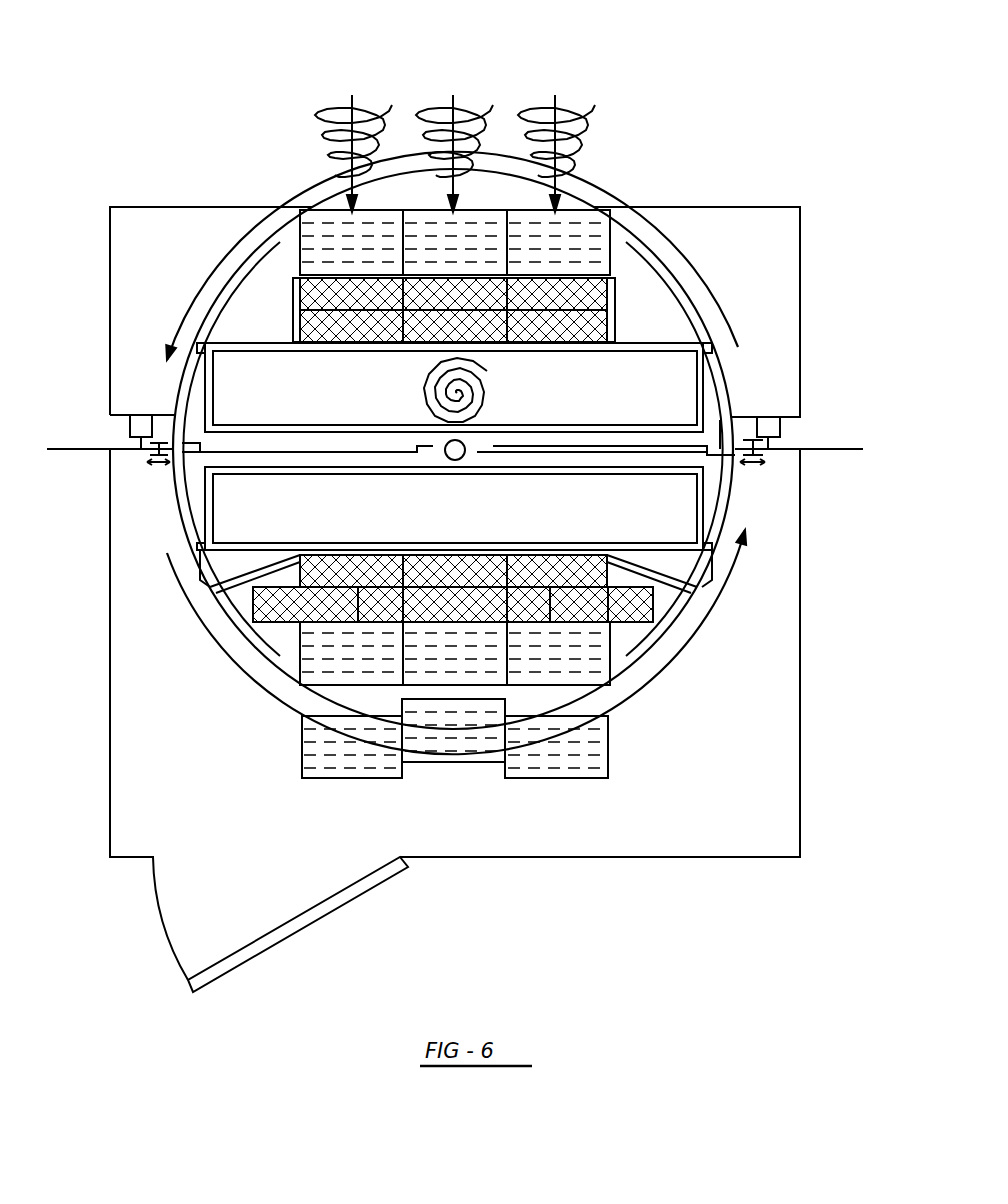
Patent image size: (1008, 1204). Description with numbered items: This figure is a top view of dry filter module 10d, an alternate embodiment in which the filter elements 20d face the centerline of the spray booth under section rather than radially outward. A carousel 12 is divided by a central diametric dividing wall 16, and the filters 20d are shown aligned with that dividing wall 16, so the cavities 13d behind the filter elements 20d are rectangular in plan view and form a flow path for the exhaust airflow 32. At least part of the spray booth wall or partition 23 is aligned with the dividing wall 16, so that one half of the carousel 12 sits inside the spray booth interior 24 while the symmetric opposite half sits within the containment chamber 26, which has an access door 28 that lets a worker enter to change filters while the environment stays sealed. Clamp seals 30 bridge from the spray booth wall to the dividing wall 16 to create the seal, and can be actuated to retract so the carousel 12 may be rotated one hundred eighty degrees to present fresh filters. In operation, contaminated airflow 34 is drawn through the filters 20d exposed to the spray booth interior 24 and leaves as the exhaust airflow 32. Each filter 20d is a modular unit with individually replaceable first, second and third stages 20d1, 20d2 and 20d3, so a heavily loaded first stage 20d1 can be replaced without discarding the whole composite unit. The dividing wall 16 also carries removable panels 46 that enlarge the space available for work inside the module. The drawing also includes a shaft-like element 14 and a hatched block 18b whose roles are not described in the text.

The dry filter module 10d is at (646, 143).
The carousel 12 is at (733, 498).
The cavities 13d is at (350, 406).
The shaft 14 is at (460, 458).
The central diametric dividing wall 16 is at (720, 447).
The heating element block 18b is at (613, 290).
The filter elements 20d is at (613, 320).
The first stage 20d1 is at (600, 660).
The second stage 20d2 is at (642, 601).
The third stage 20d3 is at (696, 568).
The spray booth wall or partition 23 is at (80, 449).
The spray booth interior 24 is at (216, 152).
The containment chamber 26 is at (167, 635).
The access door 28 is at (340, 908).
The clamp seals 30 is at (763, 428).
The exhaust airflow 32 is at (493, 383).
The contaminated airflow 34 is at (338, 102).
The removable panels 46 is at (577, 447).